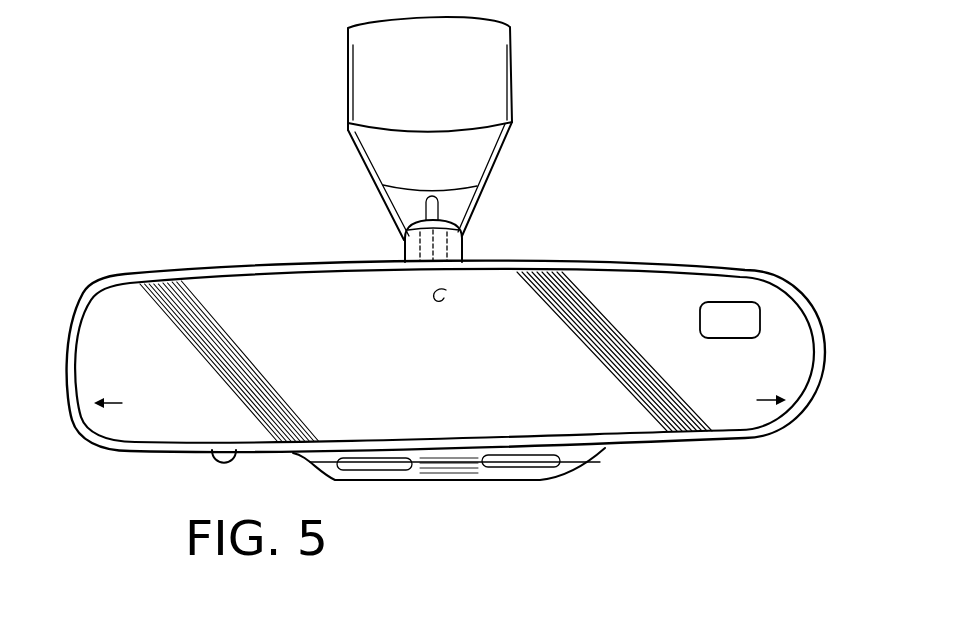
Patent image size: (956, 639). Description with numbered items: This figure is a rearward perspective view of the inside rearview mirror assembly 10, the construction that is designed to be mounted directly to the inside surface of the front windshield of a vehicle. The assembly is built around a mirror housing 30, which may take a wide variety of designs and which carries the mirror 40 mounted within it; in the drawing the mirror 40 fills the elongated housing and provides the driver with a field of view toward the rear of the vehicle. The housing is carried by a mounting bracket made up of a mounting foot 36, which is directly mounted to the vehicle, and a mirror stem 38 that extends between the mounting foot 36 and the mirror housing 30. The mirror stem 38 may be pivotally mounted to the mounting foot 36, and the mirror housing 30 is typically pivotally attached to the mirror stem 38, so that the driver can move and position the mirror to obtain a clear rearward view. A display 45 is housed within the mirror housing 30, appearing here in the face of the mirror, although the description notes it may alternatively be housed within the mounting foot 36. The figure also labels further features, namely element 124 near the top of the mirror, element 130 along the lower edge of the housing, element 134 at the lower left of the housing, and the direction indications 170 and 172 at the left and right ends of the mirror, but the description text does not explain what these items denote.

The rearview mirror assembly 10 is at (82, 289).
The mirror housing 30 is at (62, 452).
The mounting foot 36 is at (503, 132).
The mirror stem 38 is at (411, 245).
The mirror 40 is at (645, 410).
The display 45 is at (752, 321).
The sensor 124 is at (446, 290).
The display 130 is at (500, 462).
The sensor bump 134 is at (222, 463).
The left direction arrow 170 is at (106, 398).
The right direction arrow 172 is at (742, 410).